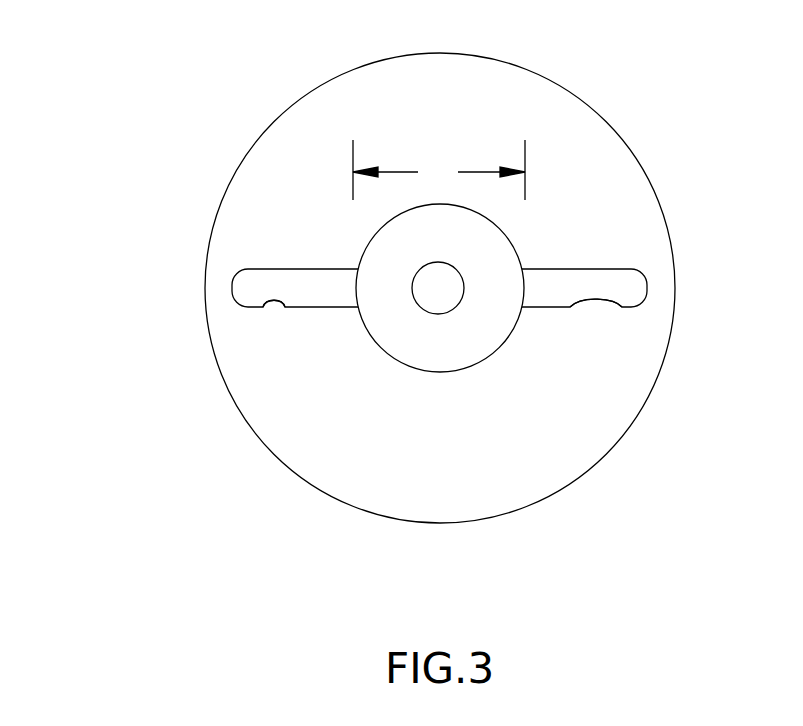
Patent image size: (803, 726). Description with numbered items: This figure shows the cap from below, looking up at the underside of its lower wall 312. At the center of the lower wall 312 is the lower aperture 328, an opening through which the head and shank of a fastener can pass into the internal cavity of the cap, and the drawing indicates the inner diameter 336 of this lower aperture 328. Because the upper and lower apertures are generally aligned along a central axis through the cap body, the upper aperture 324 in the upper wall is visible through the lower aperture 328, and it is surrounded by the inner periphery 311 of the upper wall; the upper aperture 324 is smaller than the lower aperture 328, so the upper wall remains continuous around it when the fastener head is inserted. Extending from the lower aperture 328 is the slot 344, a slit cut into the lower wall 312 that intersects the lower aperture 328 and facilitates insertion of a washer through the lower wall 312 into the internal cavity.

The lower wall 312 is at (567, 158).
The lower aperture 328 is at (513, 333).
The inner periphery 311 is at (464, 266).
The upper aperture 324 is at (417, 300).
The slot 344 is at (258, 307).
The inner diameter 336 is at (439, 170).